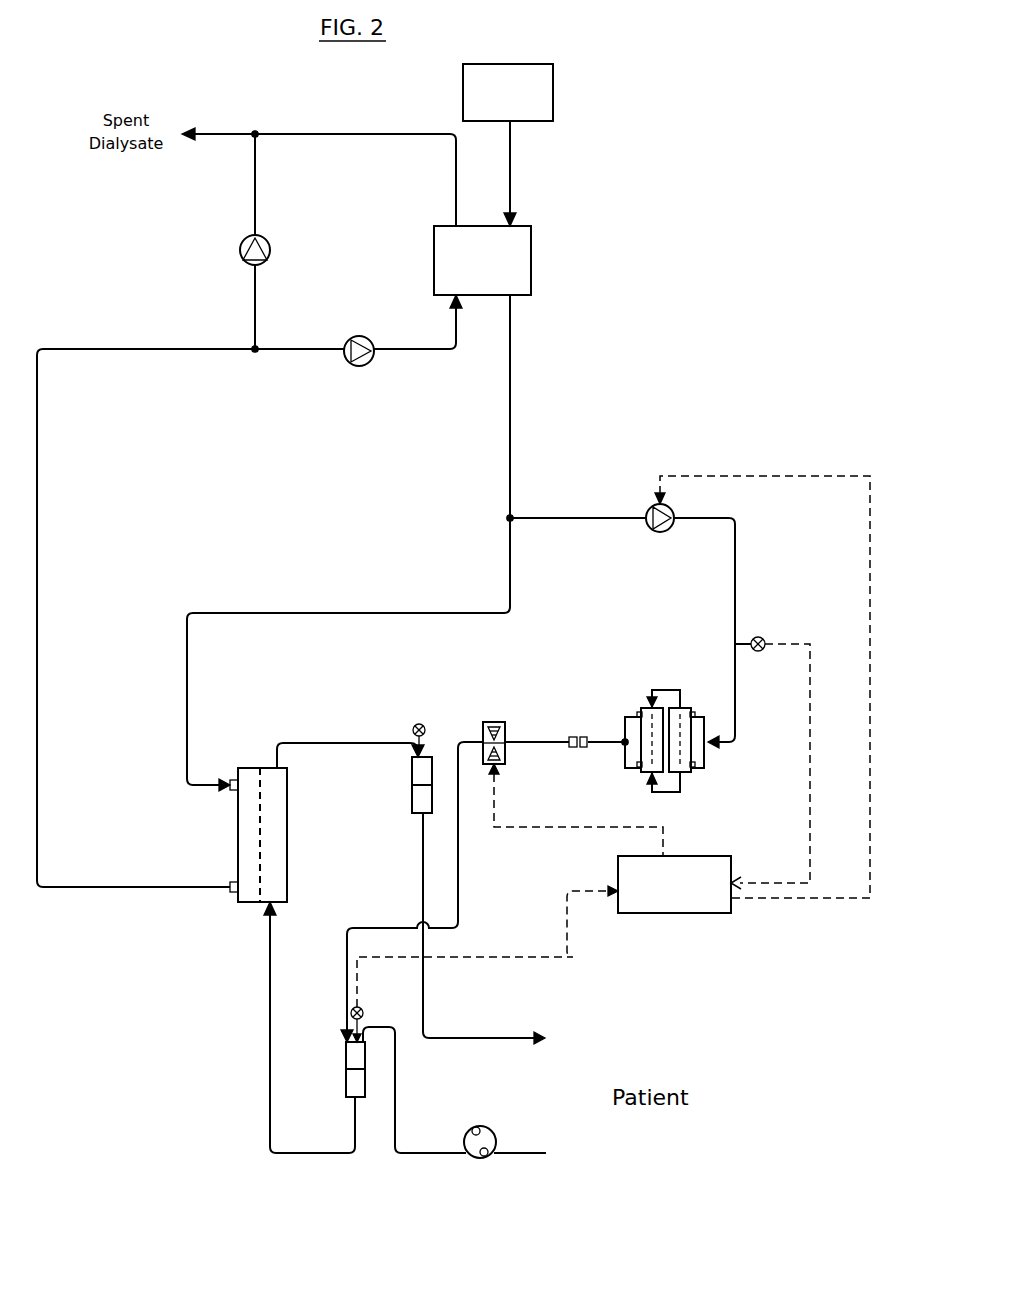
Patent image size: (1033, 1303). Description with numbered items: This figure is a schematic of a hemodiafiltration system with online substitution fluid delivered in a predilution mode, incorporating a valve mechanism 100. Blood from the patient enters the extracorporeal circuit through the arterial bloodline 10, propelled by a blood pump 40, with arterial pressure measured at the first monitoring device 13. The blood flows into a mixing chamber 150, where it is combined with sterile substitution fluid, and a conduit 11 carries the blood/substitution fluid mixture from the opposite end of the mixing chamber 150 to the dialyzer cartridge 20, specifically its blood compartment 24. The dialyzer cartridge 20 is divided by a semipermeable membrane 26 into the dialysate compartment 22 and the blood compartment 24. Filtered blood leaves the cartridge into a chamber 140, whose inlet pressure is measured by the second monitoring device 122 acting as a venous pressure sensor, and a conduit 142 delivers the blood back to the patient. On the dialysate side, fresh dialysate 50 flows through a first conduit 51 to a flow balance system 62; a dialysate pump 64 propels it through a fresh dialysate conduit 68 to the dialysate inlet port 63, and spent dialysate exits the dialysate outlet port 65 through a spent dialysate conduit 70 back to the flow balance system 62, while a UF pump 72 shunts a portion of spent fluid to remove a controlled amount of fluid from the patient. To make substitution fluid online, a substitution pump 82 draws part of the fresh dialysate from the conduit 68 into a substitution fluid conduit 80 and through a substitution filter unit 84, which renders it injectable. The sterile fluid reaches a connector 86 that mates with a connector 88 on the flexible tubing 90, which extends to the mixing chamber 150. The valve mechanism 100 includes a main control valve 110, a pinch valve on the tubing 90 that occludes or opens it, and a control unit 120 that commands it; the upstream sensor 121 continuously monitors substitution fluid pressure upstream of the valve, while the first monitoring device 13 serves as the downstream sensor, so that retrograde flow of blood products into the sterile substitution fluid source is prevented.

The fresh dialysate source 50 is at (553, 90).
The first conduit 51 is at (512, 192).
The flow balance system 62 is at (531, 272).
The UF pump 72 is at (267, 241).
The dialysate pump 64 is at (362, 366).
The fresh dialysate conduit 68 is at (510, 396).
The substitution fluid conduit 80 is at (585, 517).
The substitution pump 82 is at (650, 530).
The third monitoring device 121 is at (760, 652).
The substitution filter unit 84 is at (644, 708).
The connector 88 is at (572, 735).
The connector 86 is at (584, 748).
The flexible tubing 90 is at (520, 744).
The main control valve 110 is at (494, 720).
The second monitoring device 122 is at (414, 726).
The chamber 140 is at (411, 800).
The conduit 142 is at (422, 876).
The dialyzer cartridge 20 is at (237, 845).
The dialysate compartment 22 is at (248, 826).
The blood compartment 24 is at (280, 857).
The semipermeable membrane 26 is at (266, 782).
The dialysate inlet port 63 is at (228, 778).
The dialysate outlet port 65 is at (233, 893).
The conduit 11 is at (266, 938).
The spent dialysate conduit 70 is at (37, 756).
The mixing chamber 150 is at (345, 1082).
The first monitoring device 13 is at (365, 1011).
The arterial bloodline 10 is at (415, 1155).
The blood pump 40 is at (472, 1128).
The control unit 120 is at (652, 913).
The valve mechanism 100 is at (569, 881).